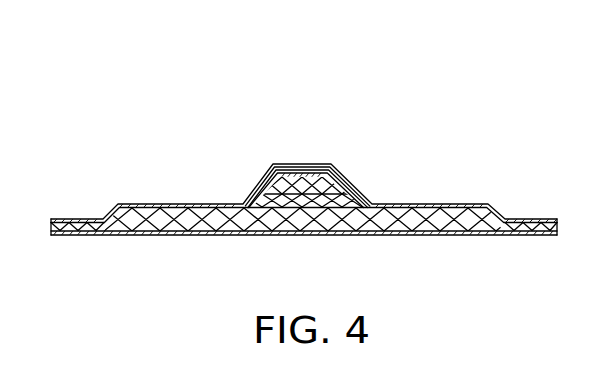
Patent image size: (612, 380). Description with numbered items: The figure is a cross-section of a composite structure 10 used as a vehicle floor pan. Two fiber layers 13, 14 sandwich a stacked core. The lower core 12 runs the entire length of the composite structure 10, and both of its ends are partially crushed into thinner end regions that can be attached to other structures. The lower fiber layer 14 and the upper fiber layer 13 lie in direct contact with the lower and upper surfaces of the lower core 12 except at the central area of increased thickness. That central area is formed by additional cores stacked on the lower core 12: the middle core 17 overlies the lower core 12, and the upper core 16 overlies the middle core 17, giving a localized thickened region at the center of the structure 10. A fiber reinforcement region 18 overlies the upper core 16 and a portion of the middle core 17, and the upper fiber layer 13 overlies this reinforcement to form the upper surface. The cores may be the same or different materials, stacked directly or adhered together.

The composite structure 10 is at (247, 110).
The lower core 12 is at (194, 236).
The upper fiber layer 13 is at (415, 204).
The fiber layer 14 is at (293, 236).
The upper core 16 is at (262, 184).
The middle core 17 is at (322, 197).
The fiber reinforcement region 18 is at (281, 177).